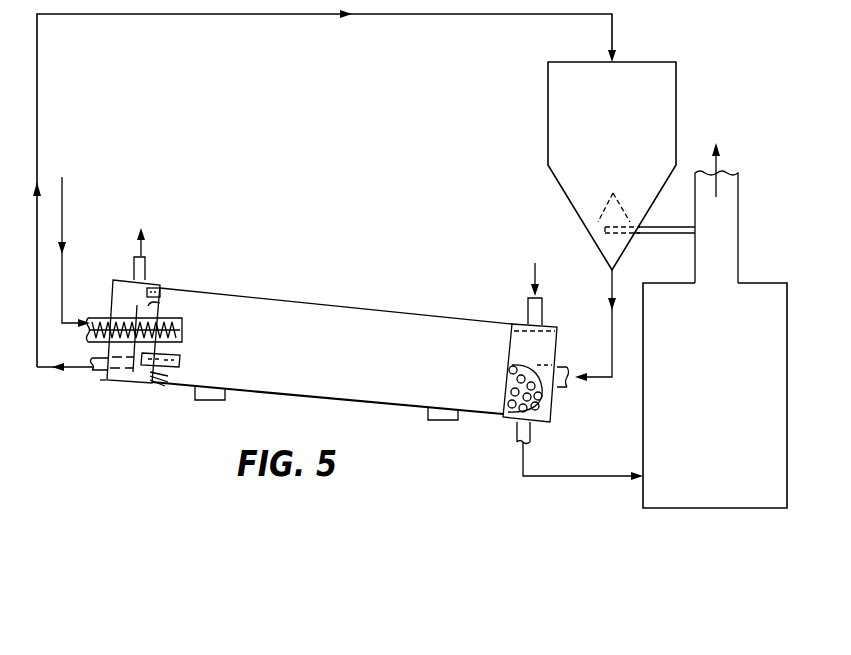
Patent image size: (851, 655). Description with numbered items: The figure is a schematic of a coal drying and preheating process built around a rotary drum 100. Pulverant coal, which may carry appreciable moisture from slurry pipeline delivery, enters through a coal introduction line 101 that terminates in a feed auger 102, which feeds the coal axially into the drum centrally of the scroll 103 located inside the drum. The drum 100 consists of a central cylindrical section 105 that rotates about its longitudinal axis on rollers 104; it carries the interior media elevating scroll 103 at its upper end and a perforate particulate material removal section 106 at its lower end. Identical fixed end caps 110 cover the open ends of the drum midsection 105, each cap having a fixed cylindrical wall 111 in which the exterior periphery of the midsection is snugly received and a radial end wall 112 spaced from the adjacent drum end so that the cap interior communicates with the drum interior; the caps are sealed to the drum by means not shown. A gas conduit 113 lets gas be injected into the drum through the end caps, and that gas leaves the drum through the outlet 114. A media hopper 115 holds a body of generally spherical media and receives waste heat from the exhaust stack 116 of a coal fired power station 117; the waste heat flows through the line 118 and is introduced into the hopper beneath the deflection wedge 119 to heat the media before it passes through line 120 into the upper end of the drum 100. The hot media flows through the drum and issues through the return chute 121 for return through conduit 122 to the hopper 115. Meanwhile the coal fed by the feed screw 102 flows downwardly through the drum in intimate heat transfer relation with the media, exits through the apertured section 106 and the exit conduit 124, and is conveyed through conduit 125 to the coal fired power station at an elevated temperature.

The drum 100 is at (318, 298).
The coal introduction line 101 is at (62, 200).
The feed auger 102 is at (111, 318).
The scroll 103 is at (160, 304).
The rollers 104 is at (210, 399).
The central cylindrical section 105 is at (402, 302).
The perforate particulate material removal section 106 is at (511, 389).
The fixed end caps 110 is at (166, 286).
The fixed cylindrical wall 111 is at (132, 386).
The radial end wall 112 is at (104, 383).
The gas conduit 113 is at (528, 300).
The outlet 114 is at (134, 262).
The media hopper 115 is at (630, 123).
The exhaust stack 116 is at (738, 207).
The coal fired power station 117 is at (734, 395).
The line 118 is at (687, 234).
The deflection wedge 119 is at (620, 193).
The line 120 is at (612, 298).
The return chute 121 is at (95, 372).
The conduit 122 is at (37, 132).
The exit conduit 124 is at (532, 433).
The conduit 125 is at (605, 468).